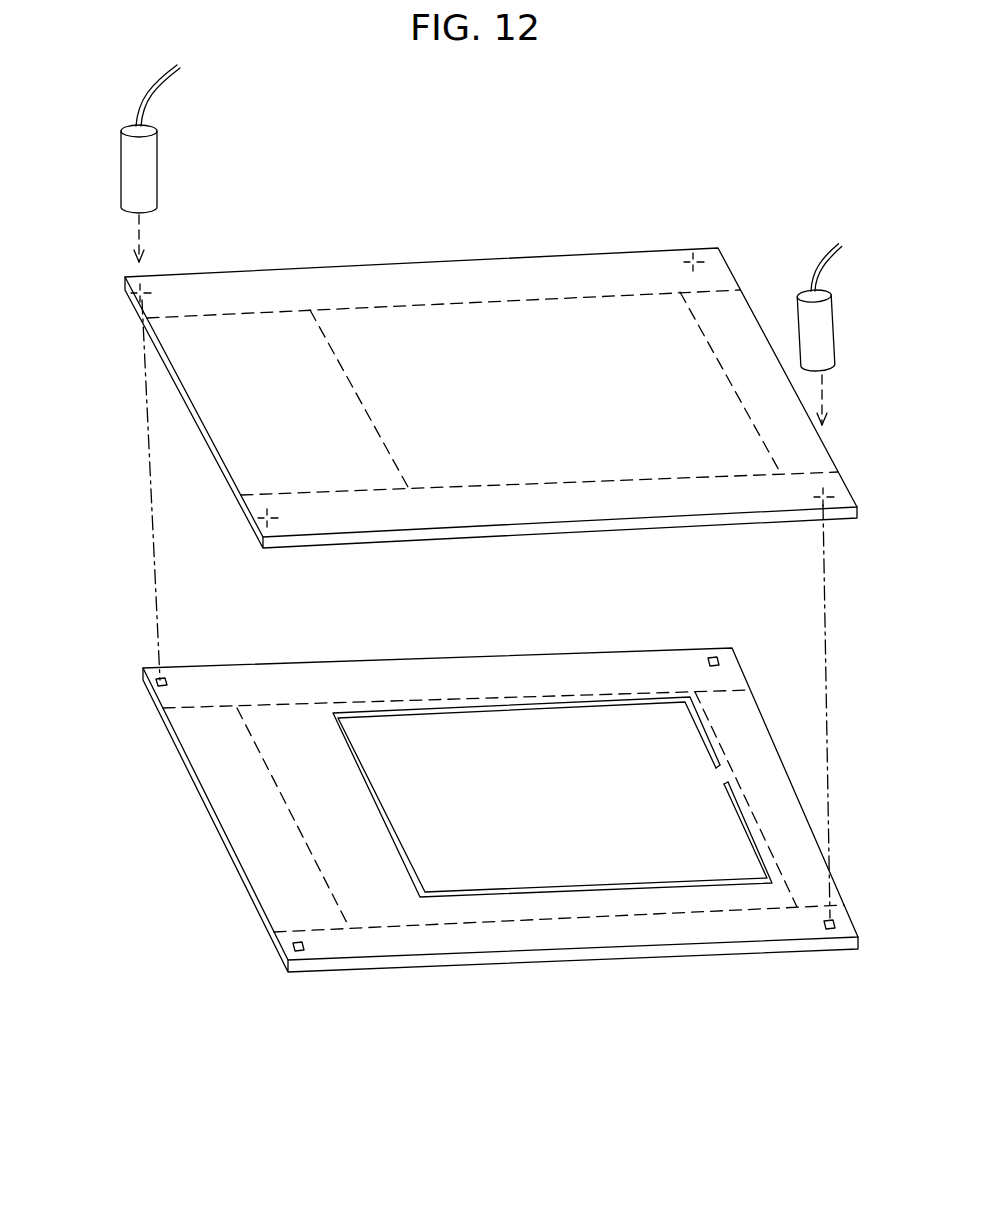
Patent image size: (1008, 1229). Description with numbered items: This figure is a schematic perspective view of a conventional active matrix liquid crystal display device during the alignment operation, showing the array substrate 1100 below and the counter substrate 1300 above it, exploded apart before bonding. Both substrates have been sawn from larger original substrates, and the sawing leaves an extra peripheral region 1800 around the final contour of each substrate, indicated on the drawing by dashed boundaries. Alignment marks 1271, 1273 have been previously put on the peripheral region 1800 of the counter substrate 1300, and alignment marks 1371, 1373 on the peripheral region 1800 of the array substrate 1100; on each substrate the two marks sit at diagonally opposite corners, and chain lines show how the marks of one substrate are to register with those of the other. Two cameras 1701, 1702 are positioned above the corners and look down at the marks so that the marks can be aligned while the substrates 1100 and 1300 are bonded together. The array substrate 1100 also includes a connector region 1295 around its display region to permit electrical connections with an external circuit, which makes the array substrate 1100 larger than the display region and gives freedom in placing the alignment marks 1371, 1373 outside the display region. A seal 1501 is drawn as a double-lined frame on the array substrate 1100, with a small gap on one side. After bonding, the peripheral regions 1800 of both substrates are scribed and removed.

The array substrate 1100 is at (198, 850).
The counter substrate 1300 is at (174, 418).
The seal 1501 is at (508, 888).
The peripheral region 1800 is at (259, 352).
The connector region 1295 is at (343, 838).
The camera 1701 is at (837, 328).
The camera 1702 is at (157, 167).
The alignment mark 1271 is at (838, 524).
The alignment mark 1273 is at (126, 298).
The alignment mark 1371 is at (837, 925).
The alignment mark 1373 is at (146, 686).